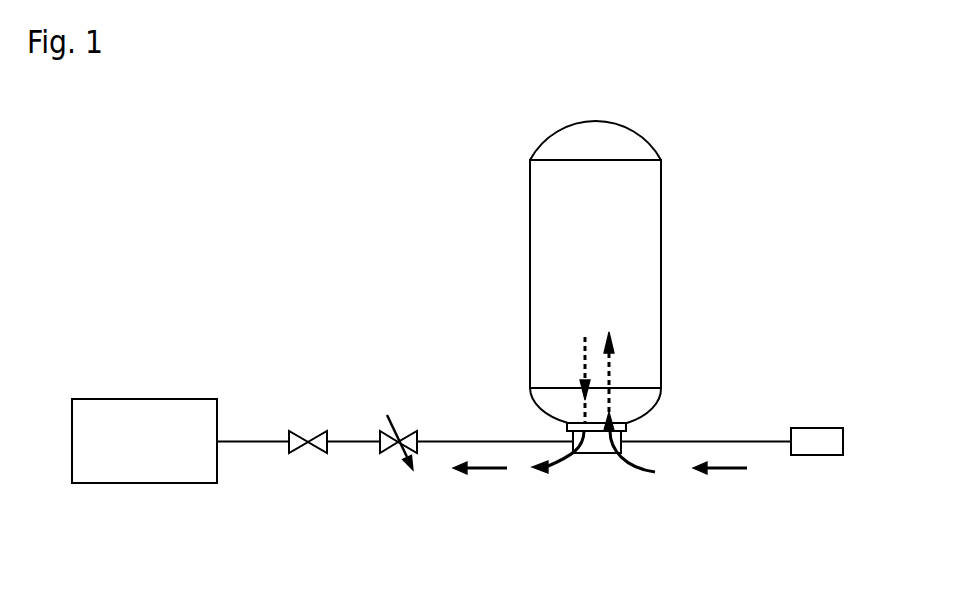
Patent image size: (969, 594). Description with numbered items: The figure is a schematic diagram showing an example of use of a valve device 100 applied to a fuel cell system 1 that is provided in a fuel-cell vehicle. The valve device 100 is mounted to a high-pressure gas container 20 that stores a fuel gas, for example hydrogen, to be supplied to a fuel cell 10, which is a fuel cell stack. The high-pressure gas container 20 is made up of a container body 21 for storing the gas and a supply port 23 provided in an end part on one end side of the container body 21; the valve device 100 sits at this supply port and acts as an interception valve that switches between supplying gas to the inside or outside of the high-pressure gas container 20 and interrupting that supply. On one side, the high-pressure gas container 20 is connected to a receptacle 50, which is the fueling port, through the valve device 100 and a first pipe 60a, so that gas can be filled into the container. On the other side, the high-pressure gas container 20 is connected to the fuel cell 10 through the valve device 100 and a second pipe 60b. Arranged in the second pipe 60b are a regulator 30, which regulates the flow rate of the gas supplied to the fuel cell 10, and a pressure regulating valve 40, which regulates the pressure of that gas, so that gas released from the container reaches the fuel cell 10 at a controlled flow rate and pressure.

The fuel cell system 1 is at (157, 163).
The fuel cell 10 is at (145, 463).
The high-pressure gas container 20 is at (642, 275).
The container body 21 is at (645, 271).
The supply port 23 is at (627, 427).
The regulator 30 is at (385, 453).
The pressure regulating valve 40 is at (313, 453).
The receptacle 50 is at (817, 445).
The first pipe 60a is at (775, 441).
The second pipe 60b is at (472, 441).
The valve device 100 is at (598, 443).